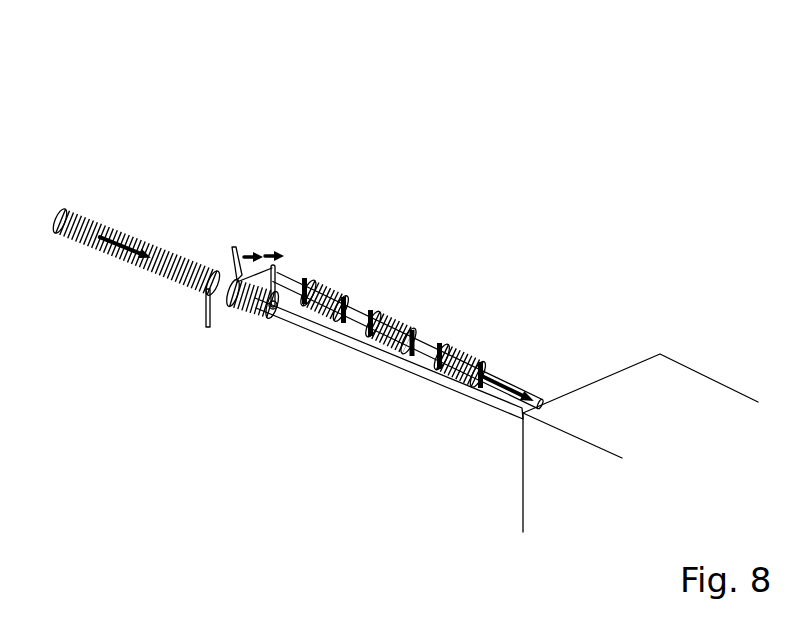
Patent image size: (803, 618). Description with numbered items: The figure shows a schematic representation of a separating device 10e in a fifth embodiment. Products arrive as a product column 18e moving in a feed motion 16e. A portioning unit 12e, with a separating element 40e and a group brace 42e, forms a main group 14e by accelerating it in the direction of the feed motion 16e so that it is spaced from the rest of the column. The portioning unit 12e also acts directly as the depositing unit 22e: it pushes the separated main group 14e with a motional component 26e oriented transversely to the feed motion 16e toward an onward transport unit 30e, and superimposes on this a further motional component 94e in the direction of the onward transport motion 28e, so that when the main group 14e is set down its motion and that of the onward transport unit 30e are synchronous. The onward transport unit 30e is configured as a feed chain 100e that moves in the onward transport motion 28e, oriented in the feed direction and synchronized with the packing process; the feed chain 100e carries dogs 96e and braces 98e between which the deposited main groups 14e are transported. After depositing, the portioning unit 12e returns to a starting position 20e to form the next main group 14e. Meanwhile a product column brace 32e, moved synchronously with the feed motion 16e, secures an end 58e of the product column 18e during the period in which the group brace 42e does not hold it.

The separating device 10e is at (160, 138).
The portioning unit 12e is at (252, 222).
The main group 14e is at (394, 320).
The feed motion 16e is at (112, 265).
The product column 18e is at (58, 238).
The starting position 20e is at (205, 275).
The depositing unit 22e is at (287, 232).
The motional component 26e is at (262, 253).
The onward transport motion 28e is at (512, 386).
The onward transport unit 30e is at (562, 256).
The product column brace 32e is at (206, 330).
The separating element 40e is at (233, 247).
The group brace 42e is at (275, 265).
The end of product column 58e is at (190, 288).
The further motional component 94e is at (246, 312).
The dog 96e is at (372, 310).
The brace 98e is at (413, 327).
The feed chain 100e is at (395, 367).